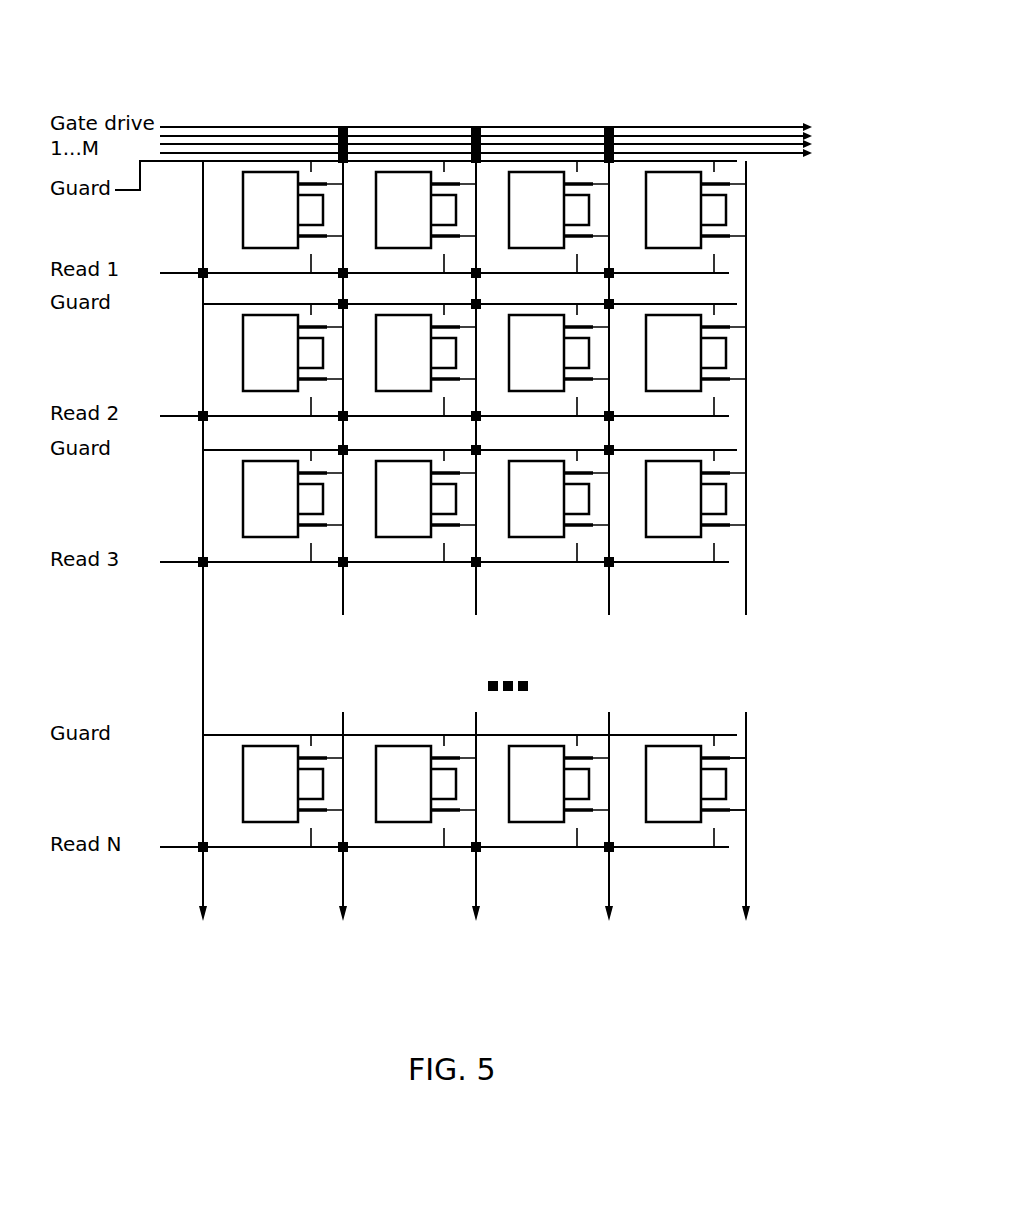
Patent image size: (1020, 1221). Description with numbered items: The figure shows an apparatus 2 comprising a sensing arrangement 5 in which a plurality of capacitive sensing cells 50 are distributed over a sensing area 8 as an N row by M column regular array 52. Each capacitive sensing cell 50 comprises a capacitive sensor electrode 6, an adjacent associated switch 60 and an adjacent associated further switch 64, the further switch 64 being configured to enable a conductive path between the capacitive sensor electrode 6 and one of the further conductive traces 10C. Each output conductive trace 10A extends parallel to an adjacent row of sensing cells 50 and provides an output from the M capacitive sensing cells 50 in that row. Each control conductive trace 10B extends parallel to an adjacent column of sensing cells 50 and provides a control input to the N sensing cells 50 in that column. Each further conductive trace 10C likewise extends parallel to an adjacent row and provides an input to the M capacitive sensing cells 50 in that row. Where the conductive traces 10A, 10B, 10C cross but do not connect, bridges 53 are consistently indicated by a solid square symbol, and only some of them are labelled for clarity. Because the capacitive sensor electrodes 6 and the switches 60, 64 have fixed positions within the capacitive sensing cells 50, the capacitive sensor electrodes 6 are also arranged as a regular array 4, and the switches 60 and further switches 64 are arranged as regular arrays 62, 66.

The apparatus 2 is at (96, 940).
The regular array of capacitive sensor electrodes 4 is at (798, 671).
The sensing arrangement 5 is at (801, 69).
The capacitive sensor electrode 6 is at (494, 504).
The sensing area 8 is at (464, 678).
The output conductive trace 10A is at (185, 273).
The control conductive trace 10B is at (243, 127).
The further conductive trace 10C is at (153, 162).
The capacitive sensing cell 50 is at (762, 204).
The regular array 52 is at (795, 493).
The bridge 53 is at (472, 300).
The switch 60 is at (736, 825).
The regular array of switches 62 is at (798, 828).
The further switch 64 is at (733, 747).
The regular array of further switches 66 is at (798, 775).